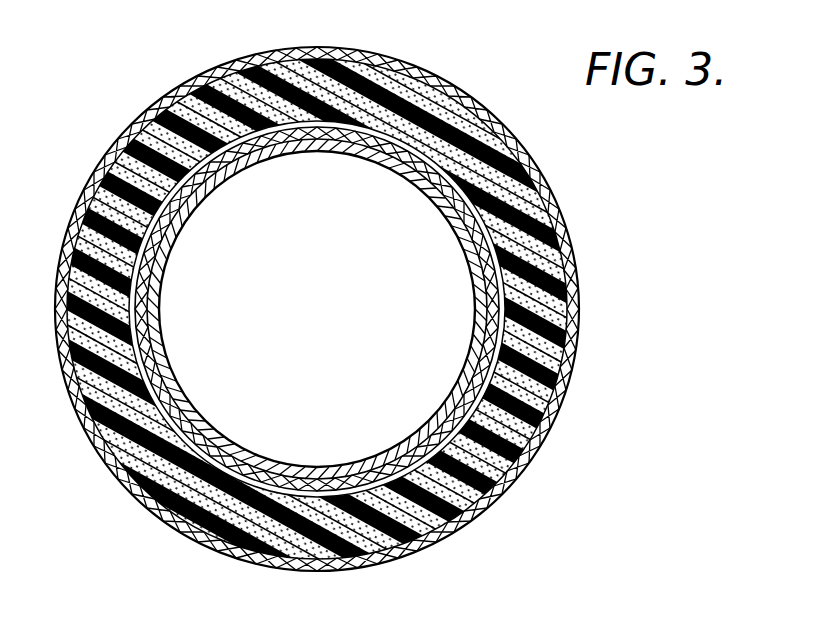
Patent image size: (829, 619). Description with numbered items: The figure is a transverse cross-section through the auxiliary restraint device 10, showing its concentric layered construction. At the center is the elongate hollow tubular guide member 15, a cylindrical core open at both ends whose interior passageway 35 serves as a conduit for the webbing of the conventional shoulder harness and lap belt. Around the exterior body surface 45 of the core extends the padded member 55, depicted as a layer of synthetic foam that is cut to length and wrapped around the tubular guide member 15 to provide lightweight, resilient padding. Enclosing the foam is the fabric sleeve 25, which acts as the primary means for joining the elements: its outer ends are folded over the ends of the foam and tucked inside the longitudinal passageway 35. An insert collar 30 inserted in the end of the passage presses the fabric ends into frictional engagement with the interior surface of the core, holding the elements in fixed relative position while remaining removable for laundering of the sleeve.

The restraint device 10 is at (172, 66).
The tubular guide member 15 is at (482, 190).
The fabric sleeve 25 is at (478, 247).
The insert collar 30 is at (466, 294).
The interior passageway 35 is at (322, 364).
The exterior body surface 45 is at (524, 262).
The padded member 55 is at (532, 412).